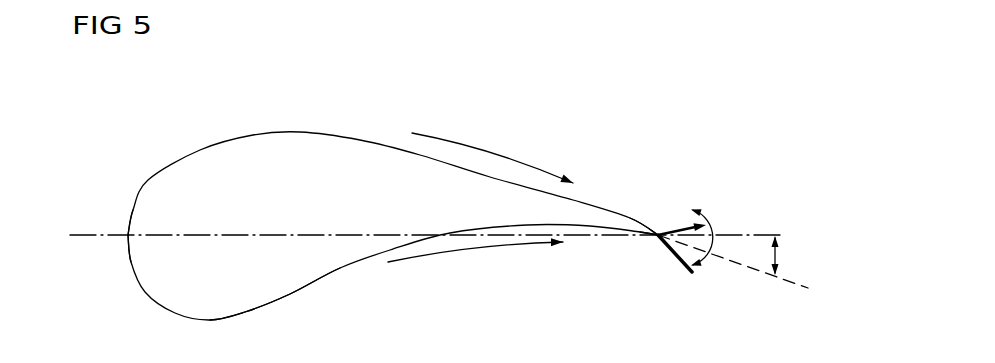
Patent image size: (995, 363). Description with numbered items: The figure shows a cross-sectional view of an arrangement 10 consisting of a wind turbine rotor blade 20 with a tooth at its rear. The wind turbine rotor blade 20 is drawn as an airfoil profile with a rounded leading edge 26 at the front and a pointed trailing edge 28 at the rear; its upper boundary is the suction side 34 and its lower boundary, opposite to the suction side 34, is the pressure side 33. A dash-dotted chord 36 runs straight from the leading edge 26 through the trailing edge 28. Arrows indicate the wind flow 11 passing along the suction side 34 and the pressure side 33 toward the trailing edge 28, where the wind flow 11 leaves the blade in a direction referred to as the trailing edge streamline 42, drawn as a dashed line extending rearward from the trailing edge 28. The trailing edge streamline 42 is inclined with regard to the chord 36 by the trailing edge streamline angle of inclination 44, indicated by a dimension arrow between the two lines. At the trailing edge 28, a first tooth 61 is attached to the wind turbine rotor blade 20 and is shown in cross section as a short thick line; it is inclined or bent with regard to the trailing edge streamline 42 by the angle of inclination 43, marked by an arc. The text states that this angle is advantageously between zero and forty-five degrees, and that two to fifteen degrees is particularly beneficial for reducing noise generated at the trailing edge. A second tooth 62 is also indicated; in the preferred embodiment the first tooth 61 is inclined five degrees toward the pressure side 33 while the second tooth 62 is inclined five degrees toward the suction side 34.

The arrangement 10 is at (375, 193).
The wind flow 11 is at (497, 158).
The wind turbine rotor blade 20 is at (273, 279).
The leading edge 26 is at (122, 243).
The trailing edge 28 is at (659, 242).
The pressure side 33 is at (372, 255).
The suction side 34 is at (348, 137).
The chord 36 is at (122, 235).
The trailing edge streamline 42 is at (790, 285).
The angle of inclination 43 is at (715, 233).
The trailing edge streamline angle of inclination 44 is at (777, 255).
The first tooth 61 is at (692, 272).
The second tooth 62 is at (680, 228).